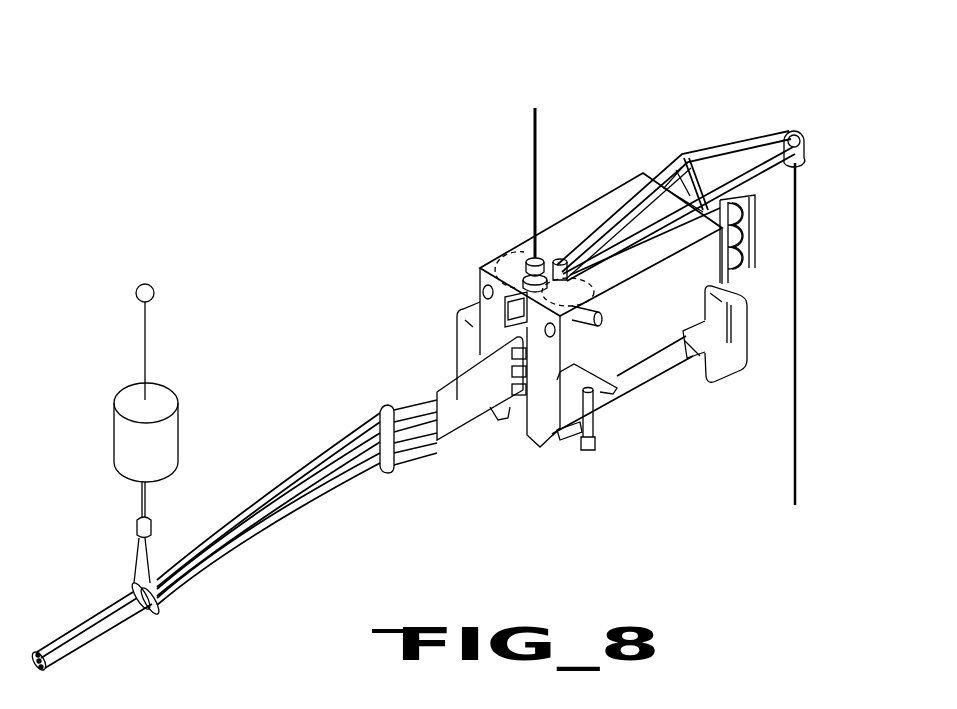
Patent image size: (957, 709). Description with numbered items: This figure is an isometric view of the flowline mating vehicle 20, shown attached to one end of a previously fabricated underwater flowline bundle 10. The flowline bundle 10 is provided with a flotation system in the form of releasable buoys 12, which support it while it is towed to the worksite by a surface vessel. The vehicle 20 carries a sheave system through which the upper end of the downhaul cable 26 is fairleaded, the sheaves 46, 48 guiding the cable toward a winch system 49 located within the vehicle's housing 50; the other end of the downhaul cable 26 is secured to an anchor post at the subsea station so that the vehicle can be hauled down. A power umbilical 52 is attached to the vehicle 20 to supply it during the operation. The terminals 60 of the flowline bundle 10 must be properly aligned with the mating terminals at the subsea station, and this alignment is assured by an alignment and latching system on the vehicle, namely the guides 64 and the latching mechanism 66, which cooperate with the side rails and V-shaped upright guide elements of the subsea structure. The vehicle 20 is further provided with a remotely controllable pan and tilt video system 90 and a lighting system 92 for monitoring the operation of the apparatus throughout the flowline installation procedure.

The flowline bundle 10 is at (103, 603).
The releasable buoys 12 is at (116, 440).
The flowline mating vehicle 20 is at (511, 247).
The downhaul cable 26 is at (798, 195).
The sheave 46 is at (800, 130).
The sheave 48 is at (558, 258).
The winch system 49 is at (590, 288).
The housing 50 is at (660, 338).
The power umbilical 52 is at (533, 138).
The terminals 60 is at (742, 217).
The guides 64 is at (457, 337).
The latching mechanism 66 is at (596, 427).
The pan and tilt video system 90 is at (505, 313).
The lighting system 92 is at (480, 283).